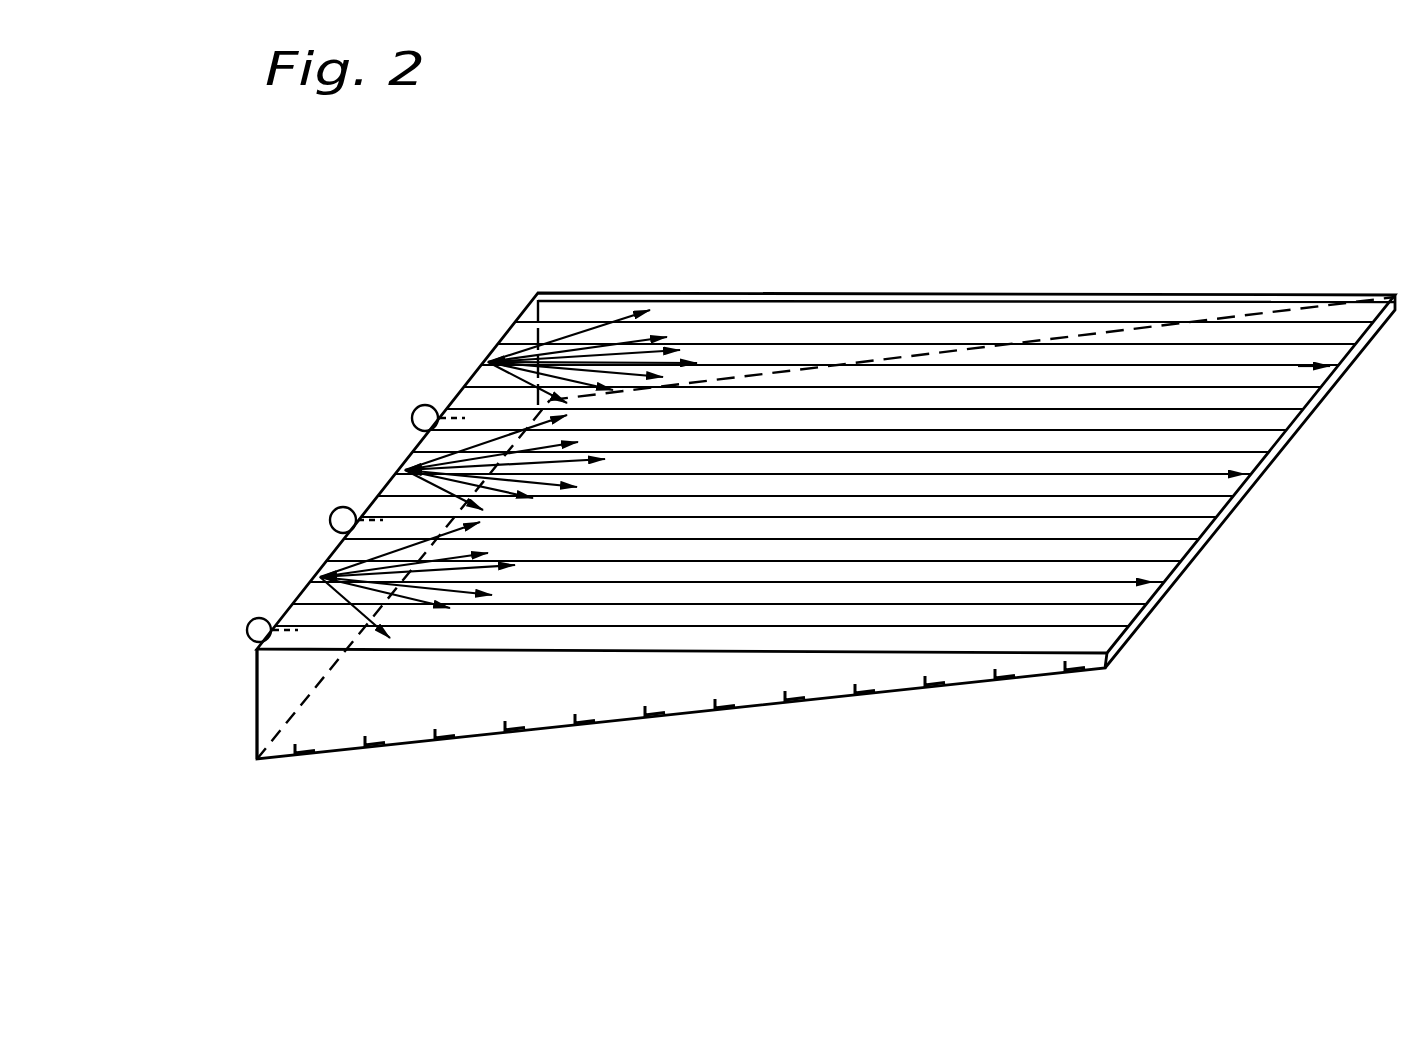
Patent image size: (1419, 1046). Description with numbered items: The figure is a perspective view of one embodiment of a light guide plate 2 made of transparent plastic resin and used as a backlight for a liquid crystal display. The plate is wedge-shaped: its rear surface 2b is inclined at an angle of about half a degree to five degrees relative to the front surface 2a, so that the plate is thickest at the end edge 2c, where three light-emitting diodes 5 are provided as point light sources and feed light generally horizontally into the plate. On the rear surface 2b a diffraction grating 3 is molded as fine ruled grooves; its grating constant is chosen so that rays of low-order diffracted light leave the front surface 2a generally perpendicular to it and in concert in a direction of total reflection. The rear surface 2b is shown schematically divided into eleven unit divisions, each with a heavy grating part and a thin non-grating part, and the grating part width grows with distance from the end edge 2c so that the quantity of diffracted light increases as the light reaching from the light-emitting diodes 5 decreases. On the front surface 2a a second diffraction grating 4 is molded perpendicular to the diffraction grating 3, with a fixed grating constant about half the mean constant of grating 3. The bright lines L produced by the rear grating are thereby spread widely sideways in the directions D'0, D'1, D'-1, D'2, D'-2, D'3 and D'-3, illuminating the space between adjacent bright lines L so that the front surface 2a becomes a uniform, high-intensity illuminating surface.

The light guide plate 2 is at (777, 519).
The front surface 2a is at (1098, 318).
The rear surface 2b is at (905, 692).
The end edge 2c is at (253, 740).
The diffraction grating 3 is at (612, 718).
The diffraction grating 4 is at (1092, 623).
The light-emitting diodes 5 is at (412, 418).
The bright lines L is at (1283, 364).
The laterally diffracted light direction D'3 is at (536, 313).
The laterally diffracted light direction D'2 is at (517, 304).
The laterally diffracted light direction D'1 is at (550, 282).
The laterally diffracted light direction D'0 is at (650, 305).
The laterally diffracted light direction D'-1 is at (625, 285).
The laterally diffracted light direction D'-2 is at (604, 264).
The laterally diffracted light direction D'-3 is at (569, 253).